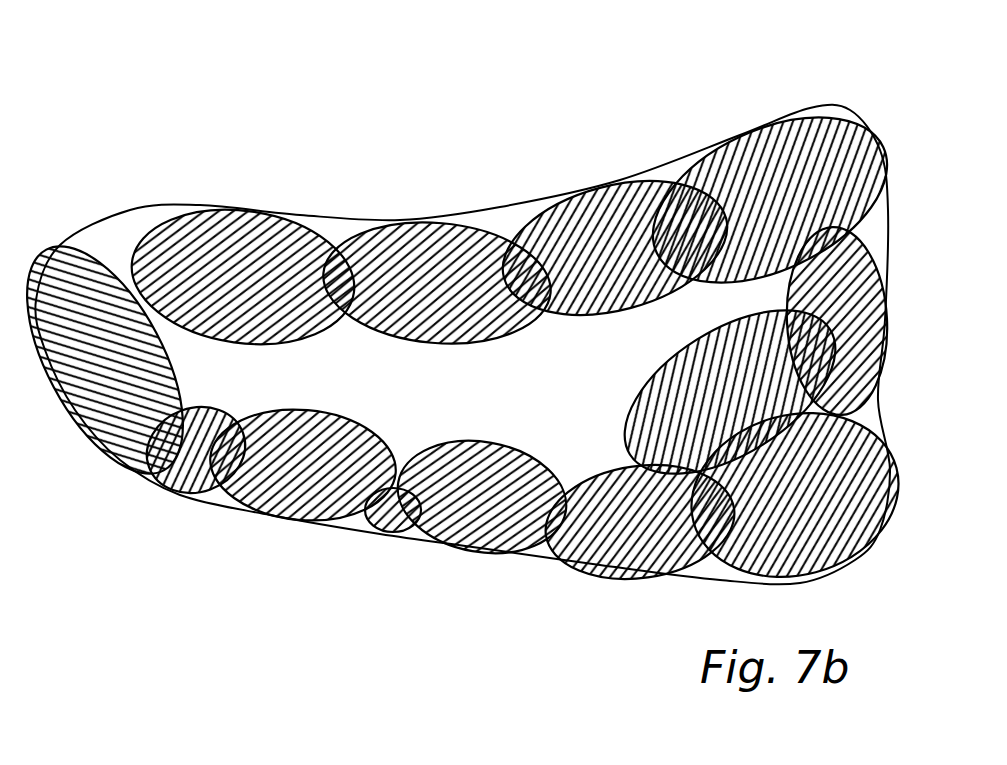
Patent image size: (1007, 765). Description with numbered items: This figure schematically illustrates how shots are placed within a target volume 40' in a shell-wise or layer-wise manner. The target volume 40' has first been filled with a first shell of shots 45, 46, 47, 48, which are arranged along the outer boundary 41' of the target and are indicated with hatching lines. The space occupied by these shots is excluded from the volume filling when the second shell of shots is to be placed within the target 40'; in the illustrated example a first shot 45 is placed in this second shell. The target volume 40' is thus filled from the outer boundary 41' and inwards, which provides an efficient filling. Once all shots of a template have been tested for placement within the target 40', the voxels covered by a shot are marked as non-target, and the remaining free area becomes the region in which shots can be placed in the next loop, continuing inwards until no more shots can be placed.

The target volume 40' is at (492, 337).
The outer boundary 41' is at (462, 345).
The shot 45 is at (278, 228).
The shot 46 is at (886, 350).
The shot 47 is at (177, 490).
The shot 48 is at (398, 497).